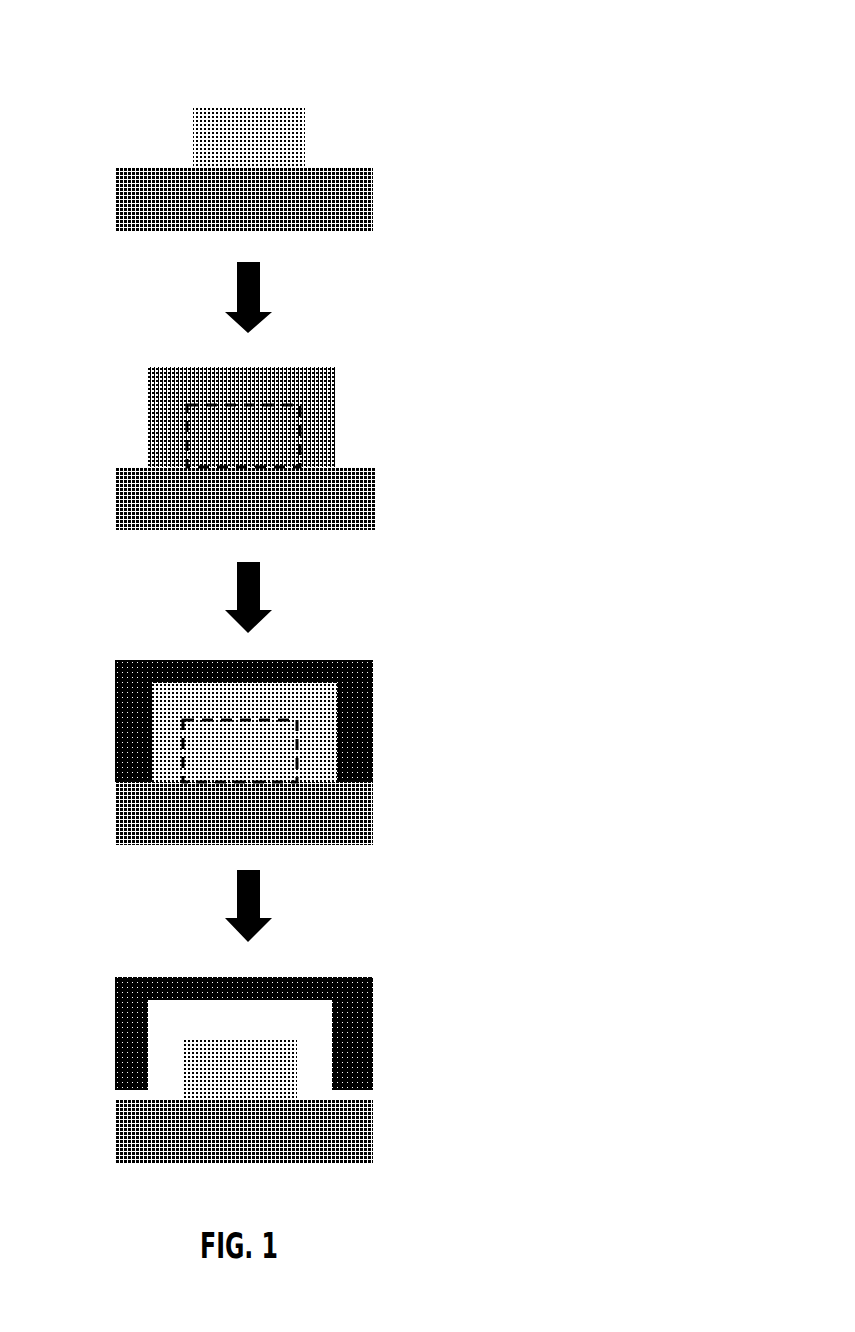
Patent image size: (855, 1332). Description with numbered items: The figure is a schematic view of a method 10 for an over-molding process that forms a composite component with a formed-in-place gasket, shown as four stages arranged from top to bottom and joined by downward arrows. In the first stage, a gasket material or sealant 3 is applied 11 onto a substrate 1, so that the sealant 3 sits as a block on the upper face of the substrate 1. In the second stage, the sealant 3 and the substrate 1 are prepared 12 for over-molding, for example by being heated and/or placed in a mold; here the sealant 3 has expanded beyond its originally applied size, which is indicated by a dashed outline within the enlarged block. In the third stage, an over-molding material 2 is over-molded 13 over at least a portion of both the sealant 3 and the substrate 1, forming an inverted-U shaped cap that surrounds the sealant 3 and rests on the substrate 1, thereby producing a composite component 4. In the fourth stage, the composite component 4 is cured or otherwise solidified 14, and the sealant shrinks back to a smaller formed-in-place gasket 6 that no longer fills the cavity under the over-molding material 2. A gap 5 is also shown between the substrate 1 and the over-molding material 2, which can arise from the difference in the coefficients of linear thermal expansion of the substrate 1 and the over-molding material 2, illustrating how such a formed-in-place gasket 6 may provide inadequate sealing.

The substrate 1 is at (360, 197).
The over-molding material 2 is at (373, 722).
The sealant 3 is at (297, 131).
The composite component 4 is at (90, 683).
The gap 5 is at (368, 1095).
The formed-in-place gasket 6 is at (200, 1068).
The method 10 is at (473, 60).
The applying step 11 is at (508, 200).
The preparing step 12 is at (508, 497).
The over-molding step 13 is at (507, 807).
The curing step 14 is at (507, 1137).